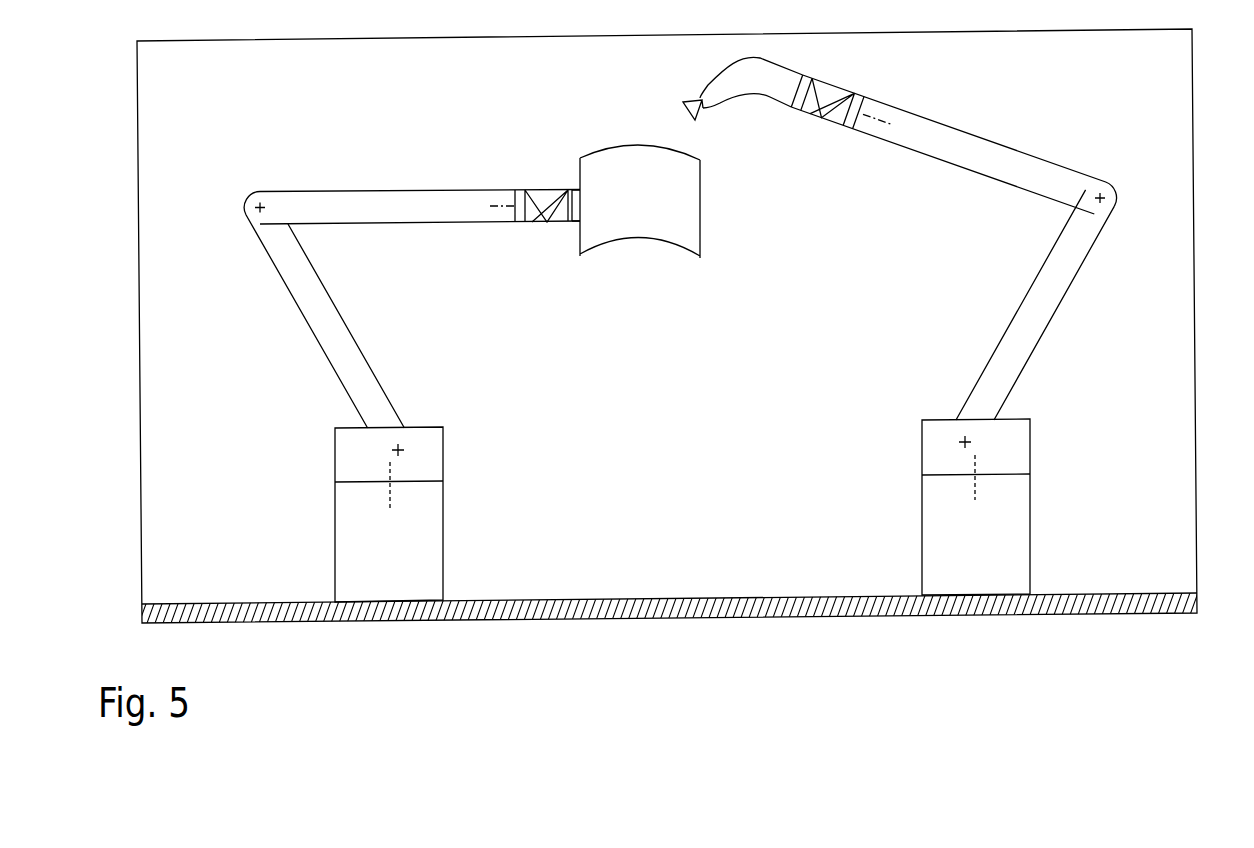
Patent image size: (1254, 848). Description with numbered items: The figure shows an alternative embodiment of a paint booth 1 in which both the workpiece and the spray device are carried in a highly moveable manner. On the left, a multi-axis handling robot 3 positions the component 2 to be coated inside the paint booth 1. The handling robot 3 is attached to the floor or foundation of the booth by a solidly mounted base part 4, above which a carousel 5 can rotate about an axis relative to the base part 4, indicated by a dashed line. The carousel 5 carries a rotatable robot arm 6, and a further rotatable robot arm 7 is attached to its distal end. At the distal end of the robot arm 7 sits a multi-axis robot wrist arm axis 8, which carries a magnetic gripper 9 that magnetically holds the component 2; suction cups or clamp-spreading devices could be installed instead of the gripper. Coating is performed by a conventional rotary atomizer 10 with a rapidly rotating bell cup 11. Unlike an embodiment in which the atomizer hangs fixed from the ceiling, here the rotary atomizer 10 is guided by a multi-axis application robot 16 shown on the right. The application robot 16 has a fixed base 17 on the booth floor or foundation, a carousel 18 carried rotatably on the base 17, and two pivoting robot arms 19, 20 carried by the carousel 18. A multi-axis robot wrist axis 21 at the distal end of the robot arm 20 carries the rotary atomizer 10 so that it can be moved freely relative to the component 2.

The paint booth 1 is at (1195, 318).
The component 2 is at (700, 220).
The handling robot 3 is at (412, 375).
The base part 4 is at (335, 578).
The carousel 5 is at (445, 468).
The robot arm 6 is at (298, 310).
The robot arm 7 is at (393, 190).
The robot wrist arm axis 8 is at (545, 222).
The magnetic gripper 9 is at (575, 222).
The rotary atomizer 10 is at (735, 108).
The bell cup 11 is at (684, 103).
The application robot 16 is at (869, 326).
The base 17 is at (922, 563).
The carousel 18 is at (1032, 445).
The robot arm 19 is at (1040, 350).
The robot arm 20 is at (1010, 145).
The robot wrist axis 21 is at (838, 88).